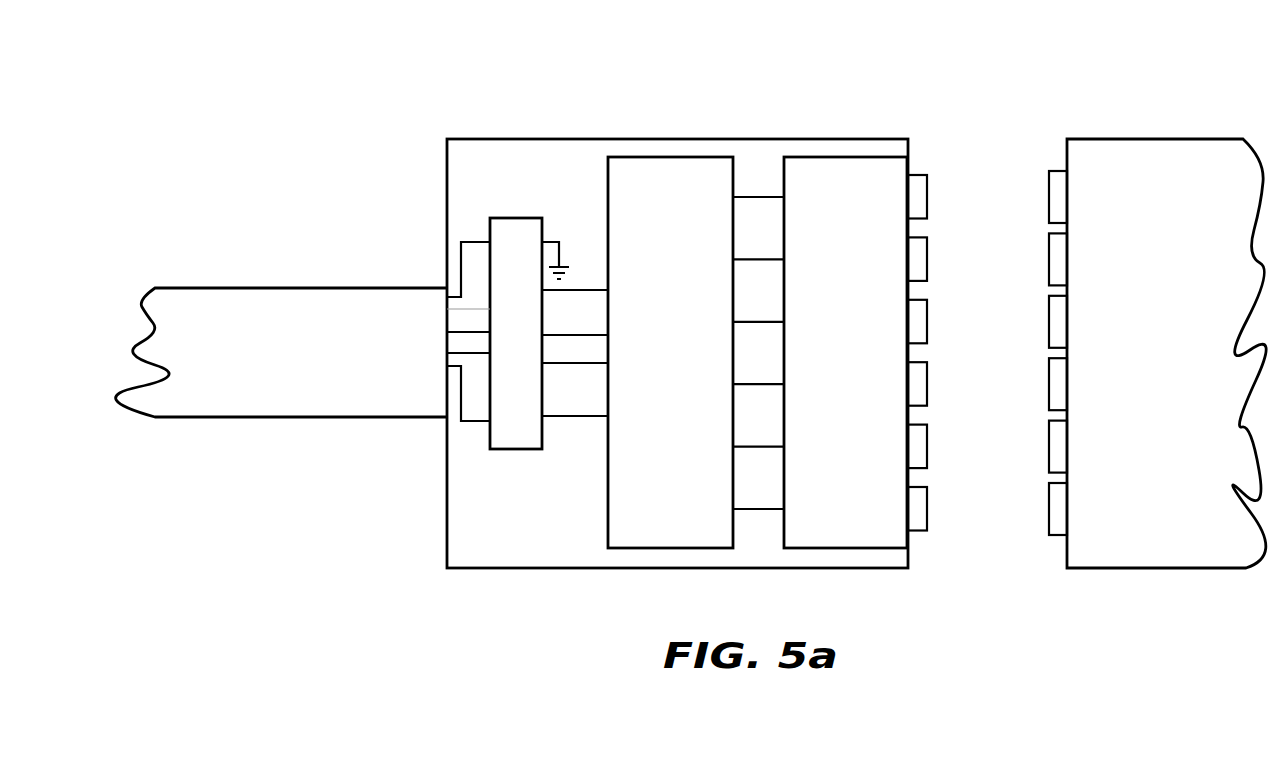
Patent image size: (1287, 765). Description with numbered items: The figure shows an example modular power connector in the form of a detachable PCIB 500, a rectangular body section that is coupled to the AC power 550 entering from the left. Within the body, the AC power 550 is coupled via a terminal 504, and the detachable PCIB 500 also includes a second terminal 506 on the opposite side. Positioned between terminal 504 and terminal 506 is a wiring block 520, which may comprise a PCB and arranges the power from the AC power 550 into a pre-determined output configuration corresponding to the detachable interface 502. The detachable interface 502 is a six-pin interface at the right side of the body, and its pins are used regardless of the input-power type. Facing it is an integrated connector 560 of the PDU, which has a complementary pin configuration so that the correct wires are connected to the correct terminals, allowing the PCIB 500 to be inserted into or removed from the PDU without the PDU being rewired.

The detachable PCIB 500 is at (447, 537).
The detachable interface 502 is at (923, 175).
The terminal 504 is at (505, 218).
The terminal 506 is at (858, 157).
The wiring block 520 is at (655, 157).
The AC power 550 is at (201, 287).
The integrated connector 560 is at (1066, 139).